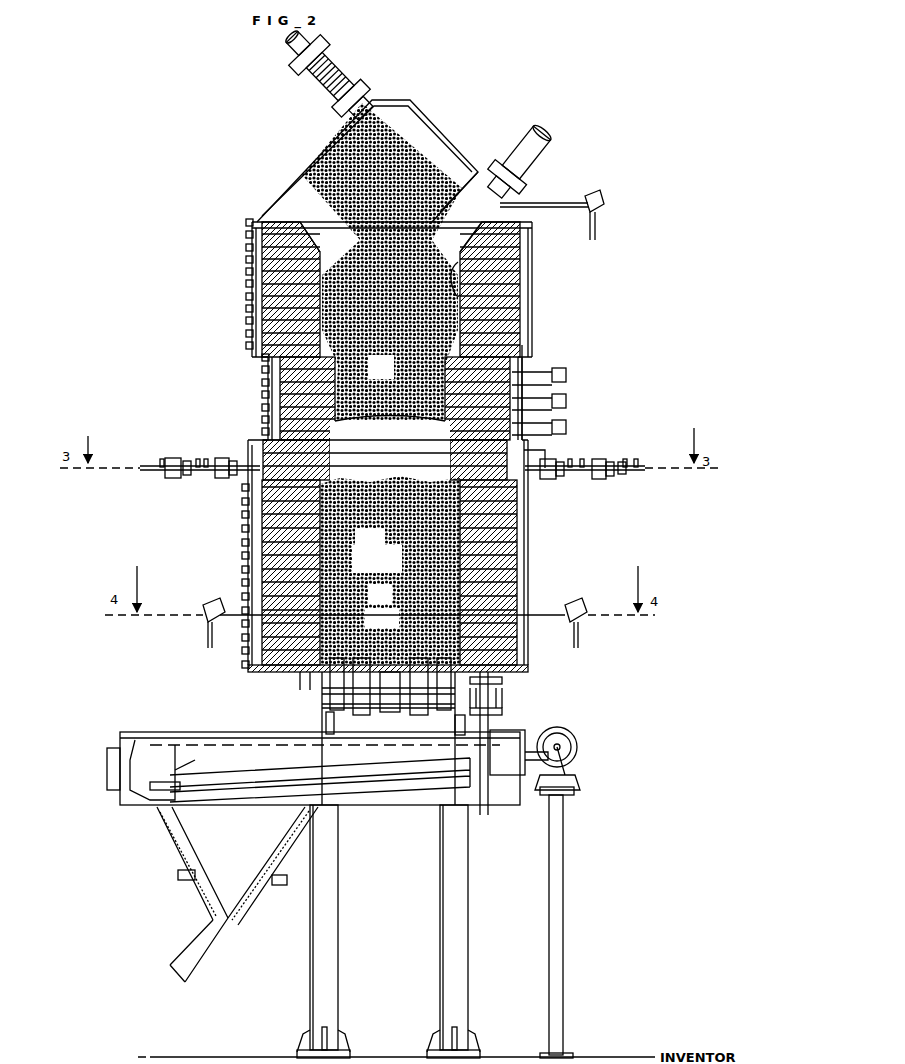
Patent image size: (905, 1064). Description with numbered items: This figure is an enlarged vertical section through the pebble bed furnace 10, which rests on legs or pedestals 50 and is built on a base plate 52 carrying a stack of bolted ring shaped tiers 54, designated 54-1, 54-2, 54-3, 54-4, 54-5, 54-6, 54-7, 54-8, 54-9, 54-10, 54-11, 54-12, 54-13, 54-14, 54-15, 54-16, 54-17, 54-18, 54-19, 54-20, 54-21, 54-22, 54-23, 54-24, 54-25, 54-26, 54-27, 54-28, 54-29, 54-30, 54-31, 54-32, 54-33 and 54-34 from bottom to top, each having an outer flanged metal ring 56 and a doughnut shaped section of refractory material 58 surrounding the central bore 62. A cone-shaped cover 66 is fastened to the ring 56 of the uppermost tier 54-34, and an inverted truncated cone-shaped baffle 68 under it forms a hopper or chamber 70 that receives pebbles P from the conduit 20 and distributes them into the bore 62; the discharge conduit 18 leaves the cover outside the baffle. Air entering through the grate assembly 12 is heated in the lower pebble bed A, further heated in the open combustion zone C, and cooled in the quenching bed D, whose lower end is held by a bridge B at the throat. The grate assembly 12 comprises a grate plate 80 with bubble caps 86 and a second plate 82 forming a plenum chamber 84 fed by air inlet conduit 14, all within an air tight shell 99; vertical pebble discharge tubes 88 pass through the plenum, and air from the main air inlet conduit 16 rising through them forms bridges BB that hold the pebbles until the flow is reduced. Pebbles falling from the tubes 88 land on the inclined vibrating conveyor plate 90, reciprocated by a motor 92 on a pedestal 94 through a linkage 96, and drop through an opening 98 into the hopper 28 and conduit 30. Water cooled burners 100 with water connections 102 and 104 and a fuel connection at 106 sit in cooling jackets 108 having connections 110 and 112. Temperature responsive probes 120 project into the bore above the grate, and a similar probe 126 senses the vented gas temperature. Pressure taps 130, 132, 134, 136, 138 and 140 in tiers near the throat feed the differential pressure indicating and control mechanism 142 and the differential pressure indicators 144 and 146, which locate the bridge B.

The furnace 10 is at (250, 195).
The grate assembly 12 is at (320, 686).
The air inlet conduit 14 is at (502, 680).
The air inlet conduit 16 is at (502, 712).
The discharge conduit 18 is at (540, 150).
The conduit 20 is at (285, 52).
The hopper 28 is at (198, 900).
The conduit 30 is at (190, 945).
The legs or pedestals 50 is at (443, 936).
The base plate 52 is at (530, 668).
The ring shaped tiers 54 is at (536, 335).
The outer flanged metal ring 56 is at (532, 248).
The refractory material 58 is at (525, 262).
The bore 62 is at (458, 240).
The cone-shaped cover 66 is at (438, 132).
The inverted truncated cone-shaped baffle 68 is at (318, 200).
The hopper or chamber 70 is at (450, 150).
The grate plate 80 is at (300, 676).
The second plate 82 is at (330, 706).
The plenum chamber 84 is at (330, 690).
The bubble caps 86 is at (496, 698).
The pebble discharge tubes 88 is at (385, 715).
The vibrating conveyor plate 90 is at (348, 770).
The motor 92 is at (575, 738).
The pedestal 94 is at (563, 845).
The linkage 96 is at (572, 750).
The opening 98 is at (270, 778).
The air tight shell 99 is at (326, 720).
The water cooled burners 100 is at (162, 472).
The water connection 102 is at (170, 458).
The water connection 104 is at (185, 461).
The fuel connection point 106 is at (630, 472).
The cooling jacket 108 is at (220, 470).
The connection 110 is at (570, 459).
The connection 112 is at (584, 459).
The temperature responsive probes 120 is at (205, 620).
The temperature responsive probe 126 is at (560, 200).
The pressure tap 130 is at (566, 440).
The pressure tap 132 is at (539, 459).
The pressure tap 134 is at (566, 415).
The pressure tap 136 is at (546, 398).
The pressure tap 138 is at (548, 385).
The pressure tap 140 is at (550, 372).
The differential pressure indicating and control mechanism 142 is at (566, 428).
The differential pressure indicator 144 is at (566, 402).
The differential pressure indicator 146 is at (567, 374).
The lower pebble bed A is at (390, 570).
The bridge B is at (372, 430).
The open combustion zone C is at (404, 466).
The quenching bed D is at (381, 367).
The pebbles P is at (410, 120).
The bridges BB is at (379, 607).
The tier 54-1 is at (242, 664).
The tier 54-2 is at (242, 650).
The tier 54-3 is at (242, 637).
The tier 54-4 is at (242, 623).
The tier 54-5 is at (242, 610).
The tier 54-6 is at (242, 596).
The tier 54-7 is at (315, 572).
The tier 54-8 is at (315, 559).
The tier 54-9 is at (242, 555).
The tier 54-10 is at (242, 542).
The tier 54-11 is at (242, 528).
The tier 54-12 is at (242, 514).
The tier 54-13 is at (242, 501).
The tier 54-14 is at (242, 487).
The tier 54-15 is at (365, 477).
The tier 54-16 is at (365, 465).
The tier 54-17 is at (262, 431).
The tier 54-18 is at (262, 419).
The tier 54-19 is at (262, 407).
The tier 54-20 is at (262, 394).
The tier 54-21 is at (262, 382).
The tier 54-22 is at (262, 369).
The tier 54-23 is at (262, 357).
The tier 54-24 is at (246, 345).
The tier 54-25 is at (246, 333).
The tier 54-26 is at (246, 320).
The tier 54-27 is at (246, 308).
The tier 54-28 is at (246, 296).
The tier 54-29 is at (246, 284).
The tier 54-30 is at (246, 271).
The tier 54-31 is at (246, 259).
The tier 54-32 is at (246, 247).
The tier 54-33 is at (246, 234).
The tier 54-34 is at (246, 222).